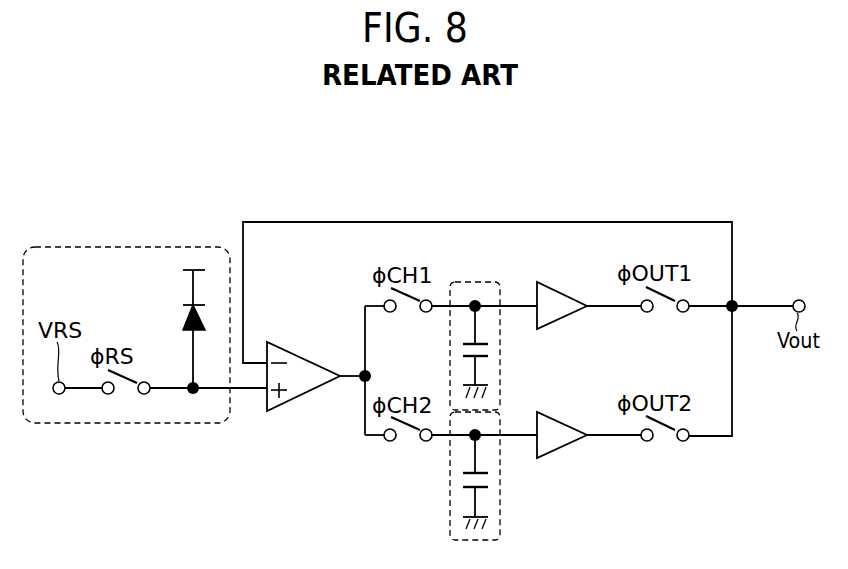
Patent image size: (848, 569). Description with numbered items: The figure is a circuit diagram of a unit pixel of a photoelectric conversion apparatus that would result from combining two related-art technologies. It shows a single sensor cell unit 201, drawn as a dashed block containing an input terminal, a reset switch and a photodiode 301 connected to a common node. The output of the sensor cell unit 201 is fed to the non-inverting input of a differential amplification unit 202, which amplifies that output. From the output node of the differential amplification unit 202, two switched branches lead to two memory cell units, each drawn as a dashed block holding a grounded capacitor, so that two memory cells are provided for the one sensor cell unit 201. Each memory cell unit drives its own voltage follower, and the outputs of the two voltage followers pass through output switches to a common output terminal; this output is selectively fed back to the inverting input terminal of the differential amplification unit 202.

The sensor cell unit 201 is at (206, 424).
The differential amplification unit 202 is at (311, 396).
The photodiode 301 is at (183, 298).